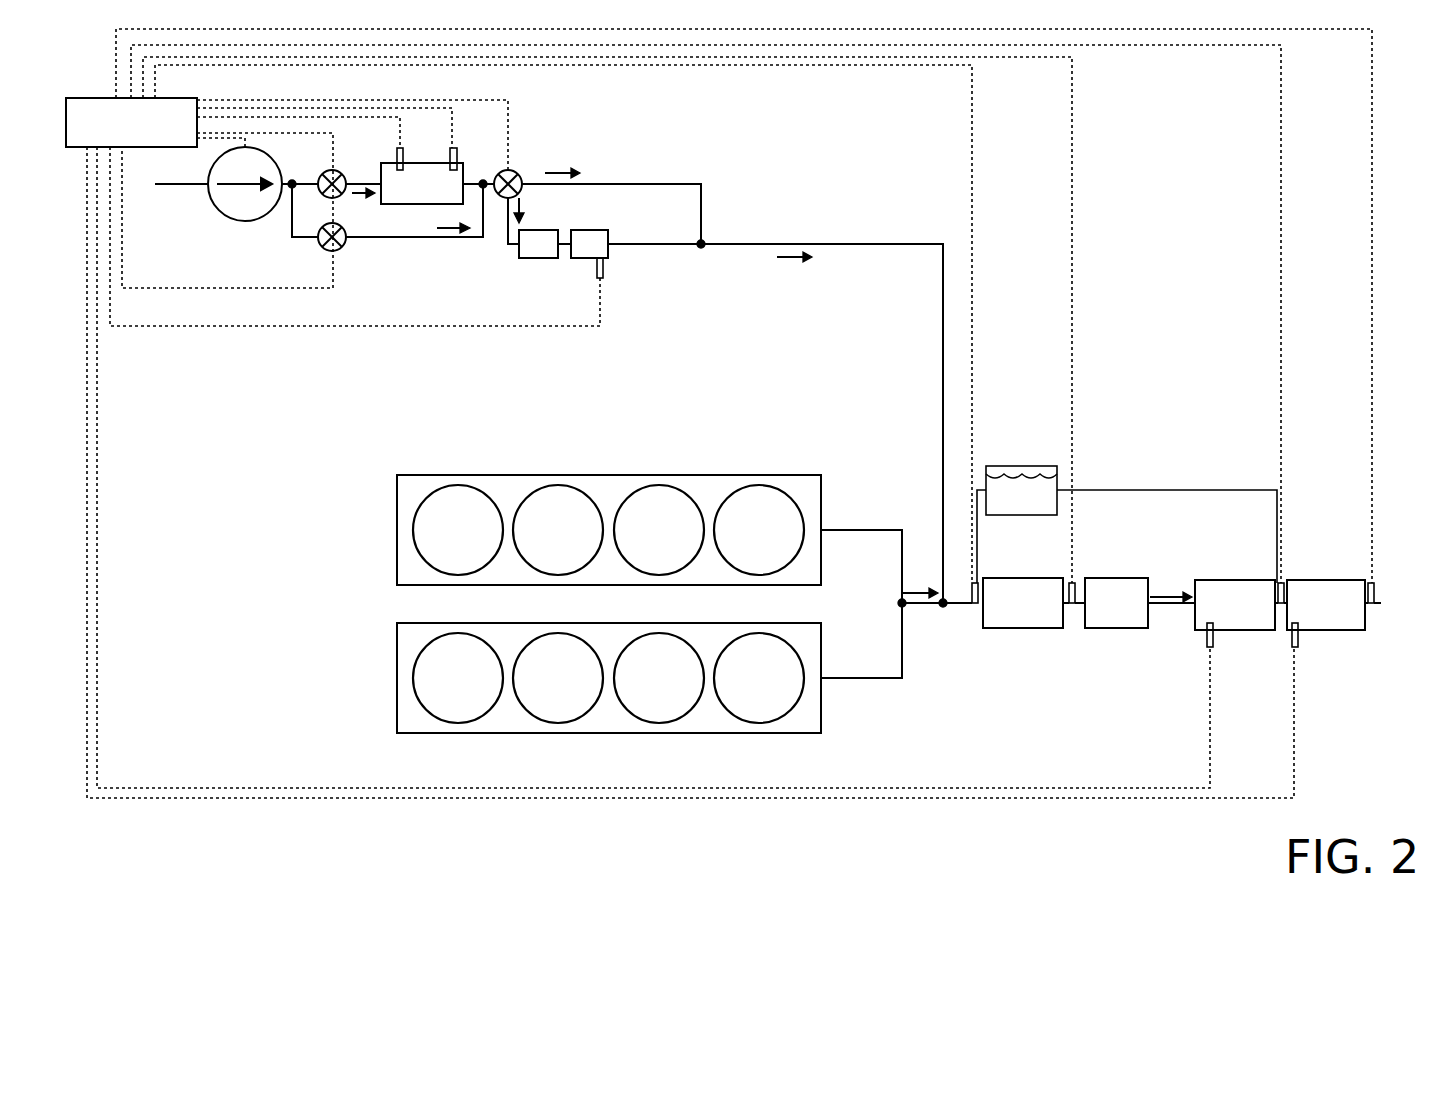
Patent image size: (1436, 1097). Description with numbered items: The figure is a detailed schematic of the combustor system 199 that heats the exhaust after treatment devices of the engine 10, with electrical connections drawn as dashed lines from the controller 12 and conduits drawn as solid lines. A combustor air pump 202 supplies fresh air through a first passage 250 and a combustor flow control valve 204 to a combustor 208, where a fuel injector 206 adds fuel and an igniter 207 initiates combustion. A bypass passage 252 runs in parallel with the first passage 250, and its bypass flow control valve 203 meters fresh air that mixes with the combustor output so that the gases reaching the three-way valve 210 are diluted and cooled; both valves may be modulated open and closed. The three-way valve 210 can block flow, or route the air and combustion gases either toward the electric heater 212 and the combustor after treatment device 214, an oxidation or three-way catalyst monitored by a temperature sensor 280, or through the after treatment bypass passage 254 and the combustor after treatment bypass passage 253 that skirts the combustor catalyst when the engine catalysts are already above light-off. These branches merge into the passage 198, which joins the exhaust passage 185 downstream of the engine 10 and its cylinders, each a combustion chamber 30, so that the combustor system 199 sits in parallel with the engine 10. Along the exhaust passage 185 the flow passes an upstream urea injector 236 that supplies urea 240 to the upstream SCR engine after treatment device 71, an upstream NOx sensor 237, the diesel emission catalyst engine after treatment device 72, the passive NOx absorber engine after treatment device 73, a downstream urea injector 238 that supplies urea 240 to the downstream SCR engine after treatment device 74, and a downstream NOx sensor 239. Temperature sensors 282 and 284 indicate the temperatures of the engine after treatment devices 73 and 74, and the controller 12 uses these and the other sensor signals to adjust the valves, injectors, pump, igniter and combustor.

The controller 12 is at (118, 134).
The first passage 250 is at (200, 188).
The combustor air pump 202 is at (245, 222).
The combustor flow control valve 204 is at (342, 198).
The bypass flow control valve 203 is at (323, 246).
The combustor 208 is at (443, 204).
The fuel injector 206 is at (403, 157).
The igniter 207 is at (457, 157).
The bypass passage 252 is at (425, 238).
The after treatment bypass passage 254 is at (507, 238).
The three-way valve 210 is at (520, 178).
The combustor after treatment bypass passage 253 is at (680, 182).
The electric heater 212 is at (540, 258).
The combustor after treatment device 214 is at (587, 258).
The temperature sensor 280 is at (602, 278).
The passage 198 is at (942, 428).
The combustor system 199 is at (630, 127).
The engine 10 is at (372, 519).
The combustion chamber 30 is at (434, 568).
The exhaust passage 185 is at (920, 606).
The urea 240 is at (1003, 504).
The upstream urea injector 236 is at (975, 583).
The engine after treatment device 71 is at (1026, 603).
The upstream NOx sensor 237 is at (1073, 583).
The engine after treatment device 72 is at (1140, 603).
The engine after treatment device 73 is at (1236, 605).
The downstream urea injector 238 is at (1281, 583).
The engine after treatment device 74 is at (1327, 605).
The downstream NOx sensor 239 is at (1374, 583).
The temperature sensor 282 is at (1210, 647).
The temperature sensor 284 is at (1295, 647).